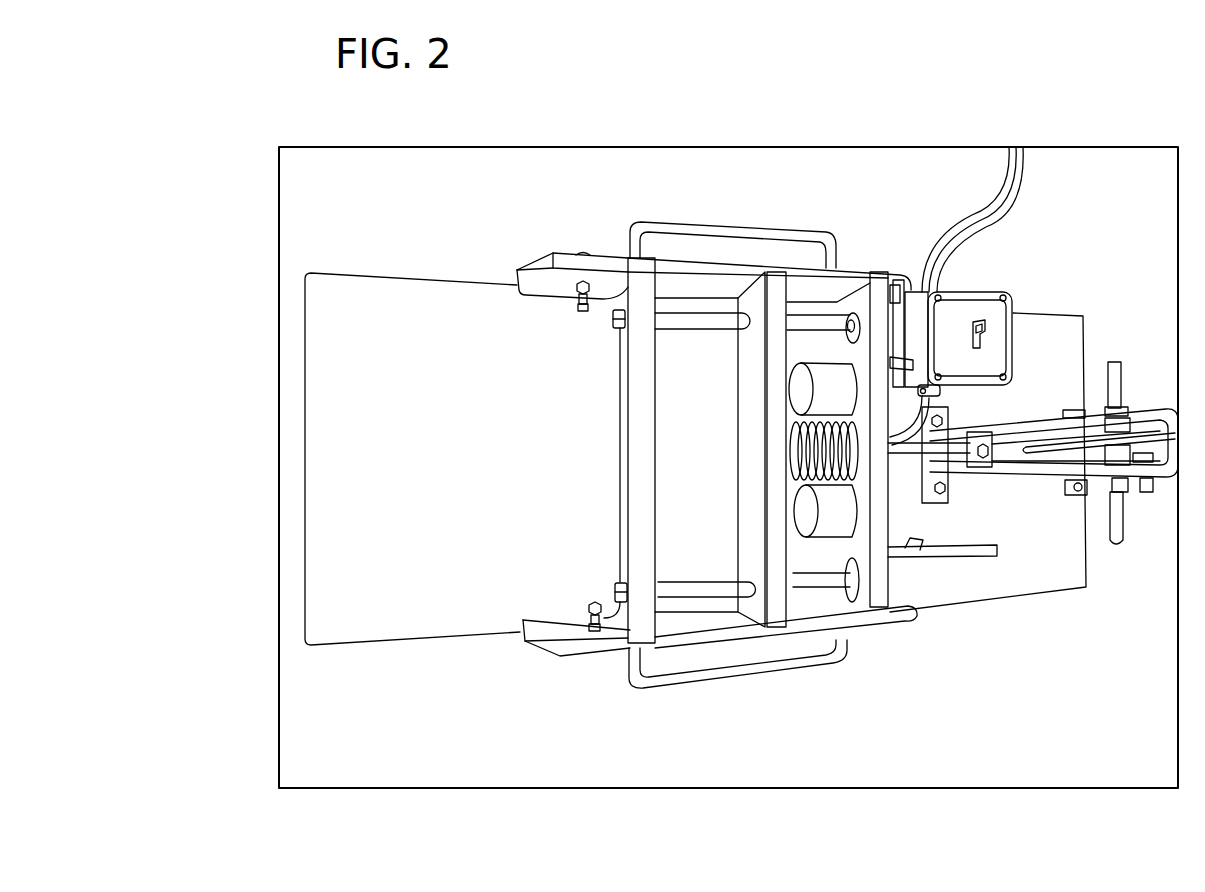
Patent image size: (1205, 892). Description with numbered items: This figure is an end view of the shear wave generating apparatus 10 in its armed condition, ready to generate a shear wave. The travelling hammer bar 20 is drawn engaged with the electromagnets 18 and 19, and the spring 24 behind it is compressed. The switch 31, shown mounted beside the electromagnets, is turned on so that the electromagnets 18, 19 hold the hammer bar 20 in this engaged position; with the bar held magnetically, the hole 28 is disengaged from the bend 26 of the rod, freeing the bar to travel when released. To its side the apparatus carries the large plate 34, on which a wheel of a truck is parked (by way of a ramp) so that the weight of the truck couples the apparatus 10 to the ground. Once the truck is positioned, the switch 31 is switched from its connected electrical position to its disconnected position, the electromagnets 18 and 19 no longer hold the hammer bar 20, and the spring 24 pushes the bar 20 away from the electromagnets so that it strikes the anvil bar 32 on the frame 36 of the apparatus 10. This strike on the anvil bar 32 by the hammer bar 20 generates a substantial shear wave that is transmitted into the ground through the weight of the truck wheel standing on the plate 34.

The shear wave generating apparatus 10 is at (360, 253).
The electromagnet 18 is at (845, 525).
The electromagnet 19 is at (836, 384).
The travelling hammer bar 20 is at (785, 608).
The spring 24 is at (855, 478).
The bend 26 is at (983, 458).
The hole 28 is at (988, 440).
The switch 31 is at (985, 305).
The anvil bar 32 is at (643, 624).
The plate 34 is at (483, 600).
The frame 36 is at (670, 308).